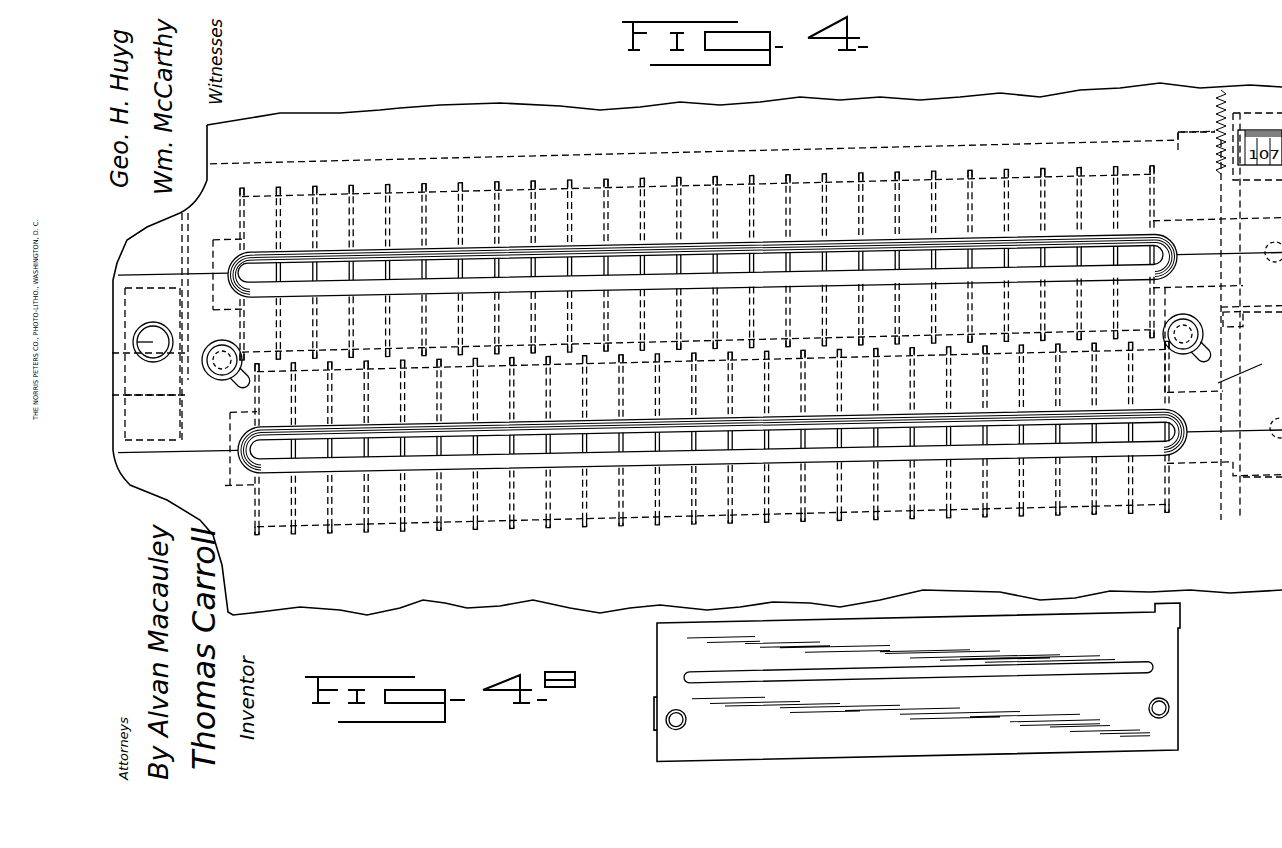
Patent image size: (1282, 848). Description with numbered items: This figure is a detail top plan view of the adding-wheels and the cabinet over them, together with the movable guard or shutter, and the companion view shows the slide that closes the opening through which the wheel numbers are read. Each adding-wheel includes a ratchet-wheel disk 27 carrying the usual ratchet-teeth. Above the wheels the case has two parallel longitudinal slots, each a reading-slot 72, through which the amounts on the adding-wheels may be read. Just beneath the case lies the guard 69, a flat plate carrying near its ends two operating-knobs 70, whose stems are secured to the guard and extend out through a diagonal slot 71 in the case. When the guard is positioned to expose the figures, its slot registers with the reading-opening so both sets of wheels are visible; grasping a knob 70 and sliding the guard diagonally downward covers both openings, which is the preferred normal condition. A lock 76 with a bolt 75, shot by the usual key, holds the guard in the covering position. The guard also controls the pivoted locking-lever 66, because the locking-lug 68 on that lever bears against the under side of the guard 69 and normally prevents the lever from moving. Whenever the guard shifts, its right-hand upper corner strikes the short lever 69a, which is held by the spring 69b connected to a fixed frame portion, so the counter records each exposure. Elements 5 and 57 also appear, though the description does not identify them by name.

In FIG. 4, the slide bar 5 is at (472, 265).
In FIG. 4, the ratchet-wheel disk 27 is at (383, 280).
In FIG. 4, the reading-slot 72 is at (517, 280).
In FIG. 4, the guard 69 is at (982, 150).
In FIG. 4A, the guard 69 is at (917, 682).
In FIG. 4, the short lever 69a is at (1216, 150).
In FIG. 4, the spring 69b is at (1213, 107).
In FIG. 4, the operating-knob 70 is at (222, 343).
In FIG. 4A, the operating-knob 70 is at (686, 736).
In FIG. 4, the diagonal slot 71 is at (237, 386).
In FIG. 4, the bolt 75 is at (168, 393).
In FIG. 4A, the bolt 75 is at (978, 694).
In FIG. 4, the lock 76 is at (153, 322).
In FIG. 4, the locking-lever 66 is at (1243, 320).
In FIG. 4, the locking-lug 68 is at (1250, 368).
In FIG. 4, the shaft 57 is at (1246, 488).